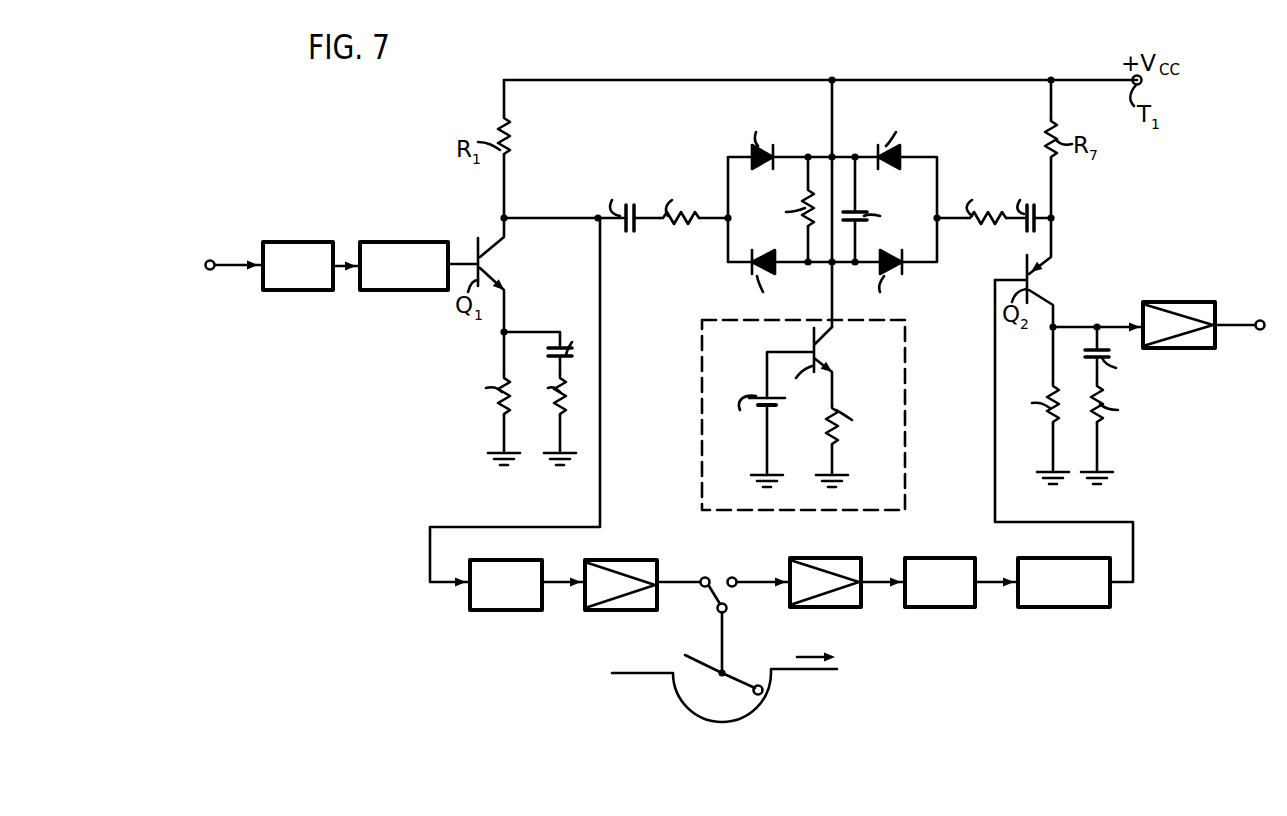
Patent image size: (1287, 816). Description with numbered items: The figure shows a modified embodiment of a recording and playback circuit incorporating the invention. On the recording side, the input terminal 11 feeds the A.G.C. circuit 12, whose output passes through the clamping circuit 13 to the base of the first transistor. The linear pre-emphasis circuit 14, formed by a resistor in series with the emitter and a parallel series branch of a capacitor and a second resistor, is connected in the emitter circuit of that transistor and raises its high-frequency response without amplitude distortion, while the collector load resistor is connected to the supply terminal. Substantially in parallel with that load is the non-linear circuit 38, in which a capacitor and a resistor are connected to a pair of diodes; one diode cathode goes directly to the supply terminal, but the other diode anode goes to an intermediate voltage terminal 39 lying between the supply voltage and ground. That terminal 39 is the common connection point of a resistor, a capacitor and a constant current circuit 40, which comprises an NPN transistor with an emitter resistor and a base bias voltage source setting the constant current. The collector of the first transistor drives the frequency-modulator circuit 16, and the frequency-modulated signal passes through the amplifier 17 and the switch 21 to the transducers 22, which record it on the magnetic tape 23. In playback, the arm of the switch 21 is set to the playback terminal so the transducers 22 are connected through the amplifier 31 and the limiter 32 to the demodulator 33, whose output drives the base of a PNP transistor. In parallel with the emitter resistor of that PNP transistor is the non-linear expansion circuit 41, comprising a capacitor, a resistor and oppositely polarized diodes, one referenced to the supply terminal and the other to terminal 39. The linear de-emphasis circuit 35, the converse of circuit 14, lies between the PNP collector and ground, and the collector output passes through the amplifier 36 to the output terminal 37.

The input terminal 11 is at (208, 270).
The A.G.C. circuit 12 is at (270, 291).
The clamping circuit 13 is at (373, 291).
The linear pre-emphasis circuit 14 is at (548, 448).
The frequency-modulator circuit 16 is at (483, 611).
The amplifier 17 is at (600, 611).
The switch 21 is at (729, 614).
The transducers 22 is at (685, 660).
The magnetic tape 23 is at (790, 670).
The amplifier 31 is at (805, 608).
The limiter 32 is at (915, 608).
The demodulator 33 is at (1030, 608).
The linear de-emphasis circuit 35 is at (1092, 463).
The amplifier 36 is at (1170, 349).
The output terminal 37 is at (1258, 330).
The non-linear circuit 38 is at (681, 267).
The intermediate voltage terminal 39 is at (838, 252).
The constant current circuit 40 is at (803, 415).
The non-linear expansion circuit 41 is at (968, 296).